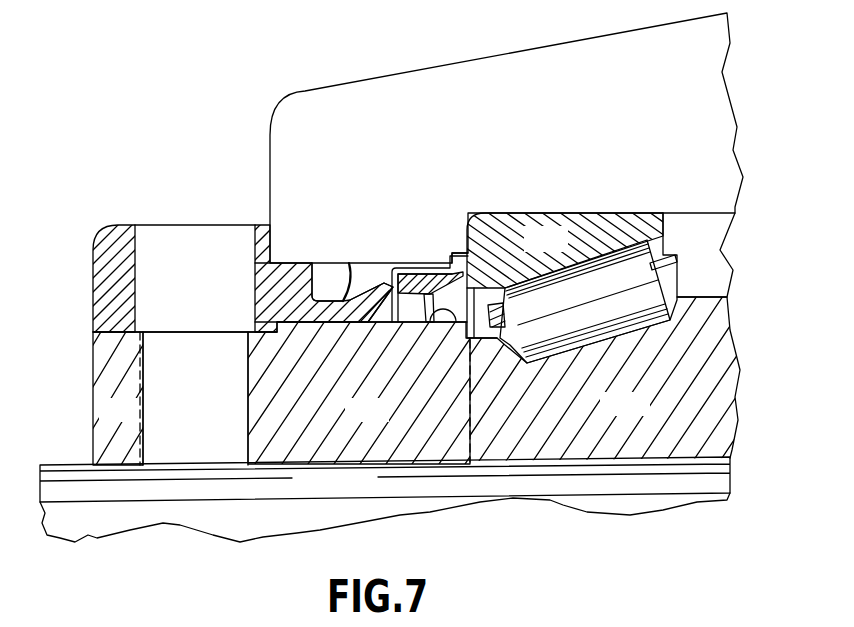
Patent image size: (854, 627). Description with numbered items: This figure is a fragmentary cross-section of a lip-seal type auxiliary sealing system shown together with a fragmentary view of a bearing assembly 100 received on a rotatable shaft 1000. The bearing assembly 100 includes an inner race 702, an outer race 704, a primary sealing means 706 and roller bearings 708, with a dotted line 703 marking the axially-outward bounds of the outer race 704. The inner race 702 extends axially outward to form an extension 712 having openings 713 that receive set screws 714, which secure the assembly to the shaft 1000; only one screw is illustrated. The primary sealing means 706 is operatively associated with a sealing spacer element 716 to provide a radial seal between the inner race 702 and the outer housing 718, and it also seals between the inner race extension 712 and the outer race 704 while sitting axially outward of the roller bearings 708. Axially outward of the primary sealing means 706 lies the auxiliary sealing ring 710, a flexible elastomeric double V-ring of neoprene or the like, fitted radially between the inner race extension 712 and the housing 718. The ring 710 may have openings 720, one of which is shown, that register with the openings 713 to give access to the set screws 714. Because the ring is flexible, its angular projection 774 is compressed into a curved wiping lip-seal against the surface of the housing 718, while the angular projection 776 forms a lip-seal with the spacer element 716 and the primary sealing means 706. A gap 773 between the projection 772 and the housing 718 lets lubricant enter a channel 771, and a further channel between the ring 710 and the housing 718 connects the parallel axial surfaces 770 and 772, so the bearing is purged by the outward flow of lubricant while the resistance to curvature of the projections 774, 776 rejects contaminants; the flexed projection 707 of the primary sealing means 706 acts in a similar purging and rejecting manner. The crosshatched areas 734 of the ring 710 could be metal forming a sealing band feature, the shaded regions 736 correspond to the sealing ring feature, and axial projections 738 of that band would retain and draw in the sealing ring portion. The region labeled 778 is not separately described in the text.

The bearing assembly 100 is at (394, 42).
The outer housing 718 is at (486, 57).
The primary sealing means 706 is at (441, 262).
The outer race 704 is at (568, 249).
The roller bearings 708 is at (648, 285).
The flexed projection 707 is at (449, 323).
The sealing ring 710 is at (95, 206).
The flange 778 is at (93, 268).
The crosshatched areas 734 is at (107, 306).
The openings 720 is at (262, 229).
The projections 738 is at (266, 290).
The shaded regions 736 is at (292, 326).
The parallel axial surface 770 is at (271, 236).
The channel 771 is at (295, 277).
The gap 773 is at (318, 266).
The projection 772 is at (334, 263).
The angular projection 774 is at (374, 268).
The sealing spacer element 716 is at (432, 243).
The angular projection 776 is at (350, 324).
The openings 713 is at (145, 346).
The inner race extension 712 is at (134, 420).
The set screws 714 is at (215, 420).
The dotted line 703 is at (477, 388).
The inner race 702 is at (647, 415).
The rotatable shaft 1000 is at (370, 502).